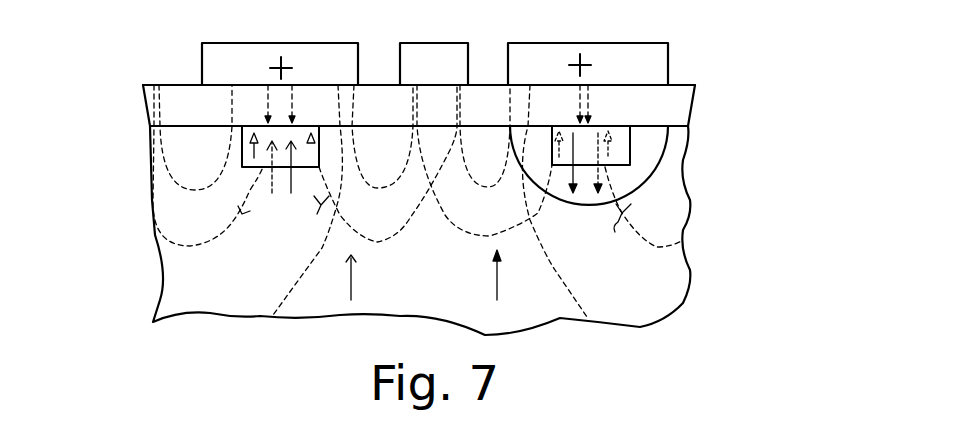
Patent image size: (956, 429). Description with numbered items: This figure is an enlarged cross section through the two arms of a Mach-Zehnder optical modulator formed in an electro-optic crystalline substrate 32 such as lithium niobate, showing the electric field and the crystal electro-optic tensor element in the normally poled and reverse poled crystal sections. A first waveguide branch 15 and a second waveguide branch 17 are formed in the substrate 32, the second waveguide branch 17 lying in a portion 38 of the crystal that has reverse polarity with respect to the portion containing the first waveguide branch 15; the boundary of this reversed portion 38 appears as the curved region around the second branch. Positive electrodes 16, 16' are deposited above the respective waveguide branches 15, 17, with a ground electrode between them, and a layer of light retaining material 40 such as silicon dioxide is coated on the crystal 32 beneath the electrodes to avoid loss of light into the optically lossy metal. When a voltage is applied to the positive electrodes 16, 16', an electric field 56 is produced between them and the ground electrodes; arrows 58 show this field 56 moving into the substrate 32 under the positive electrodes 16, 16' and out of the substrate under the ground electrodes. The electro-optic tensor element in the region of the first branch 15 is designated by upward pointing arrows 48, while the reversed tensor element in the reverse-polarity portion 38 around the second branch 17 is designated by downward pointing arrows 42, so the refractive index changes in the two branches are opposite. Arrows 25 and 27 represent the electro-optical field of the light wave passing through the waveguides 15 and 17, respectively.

The positive electrode 16 is at (280, 54).
The positive electrode 16' is at (588, 51).
The light retaining material layer 40 is at (150, 120).
The electro-optic crystalline substrate 32 is at (453, 303).
The first waveguide branch 15 is at (253, 166).
The electro-optical field arrows 25 is at (312, 150).
The second waveguide branch 17 is at (620, 153).
The electro-optical field arrows 27 is at (553, 152).
The reverse polarity portion 38 is at (636, 172).
The reversed electro-optic tensor element 42 is at (550, 216).
The electro-optic tensor element 48 is at (272, 193).
The electric field 56 is at (240, 238).
The electric field direction arrows 58 is at (289, 119).